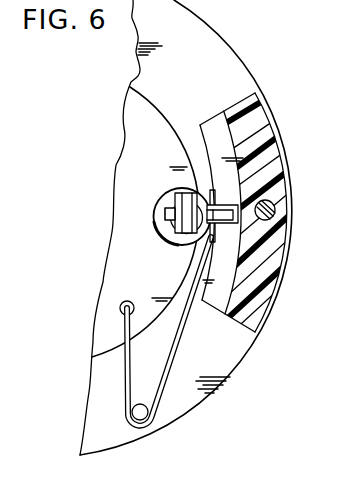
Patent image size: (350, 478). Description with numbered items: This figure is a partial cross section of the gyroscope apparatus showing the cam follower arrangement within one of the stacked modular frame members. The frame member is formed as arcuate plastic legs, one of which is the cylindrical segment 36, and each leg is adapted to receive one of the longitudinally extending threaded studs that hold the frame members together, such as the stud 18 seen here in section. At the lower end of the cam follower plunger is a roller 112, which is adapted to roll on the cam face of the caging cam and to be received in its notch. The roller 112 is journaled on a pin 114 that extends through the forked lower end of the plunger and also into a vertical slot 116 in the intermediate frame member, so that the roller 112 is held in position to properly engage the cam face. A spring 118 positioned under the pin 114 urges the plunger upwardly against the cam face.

The stud 18 is at (276, 211).
The cylindrical segment 36 is at (264, 278).
The roller 112 is at (182, 210).
The pin 114 is at (219, 224).
The vertical slot 116 is at (216, 206).
The spring 118 is at (175, 352).